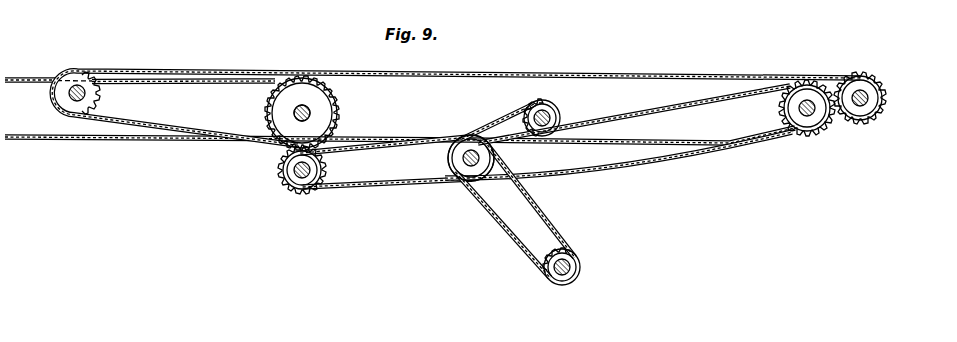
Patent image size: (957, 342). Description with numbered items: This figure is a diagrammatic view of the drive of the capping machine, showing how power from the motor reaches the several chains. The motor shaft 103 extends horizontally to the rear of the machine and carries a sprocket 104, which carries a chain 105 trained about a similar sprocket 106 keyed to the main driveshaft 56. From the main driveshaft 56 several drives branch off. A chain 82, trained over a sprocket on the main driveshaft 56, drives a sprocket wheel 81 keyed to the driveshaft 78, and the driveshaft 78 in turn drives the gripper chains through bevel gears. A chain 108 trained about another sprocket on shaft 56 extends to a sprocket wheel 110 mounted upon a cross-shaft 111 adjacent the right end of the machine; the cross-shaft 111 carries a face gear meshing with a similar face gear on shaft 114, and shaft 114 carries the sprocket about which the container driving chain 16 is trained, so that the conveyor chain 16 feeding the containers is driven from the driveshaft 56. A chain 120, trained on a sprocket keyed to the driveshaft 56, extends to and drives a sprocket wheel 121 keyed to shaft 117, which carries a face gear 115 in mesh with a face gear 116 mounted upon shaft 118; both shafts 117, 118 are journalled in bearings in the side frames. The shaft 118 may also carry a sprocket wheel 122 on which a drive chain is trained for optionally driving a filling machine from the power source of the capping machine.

The container driving chain 16 is at (640, 73).
The sprocket wheel 122 is at (301, 100).
The shaft 118 is at (290, 112).
The face gear 116 is at (338, 110).
The shaft 117 is at (280, 170).
The face gear 115 is at (302, 194).
The sprocket wheel 121 is at (320, 168).
The chain 120 is at (335, 188).
The main driveshaft 56 is at (450, 157).
The sprocket 106 is at (460, 174).
The chain 82 is at (495, 123).
The sprocket wheel 81 is at (545, 109).
The driveshaft 78 is at (552, 130).
The chain 108 is at (651, 170).
The sprocket 104 is at (557, 248).
The shaft 103 is at (578, 268).
The chain 105 is at (505, 234).
The sprocket wheel 110 is at (783, 112).
The cross-shaft 111 is at (808, 120).
The shaft 114 is at (870, 102).